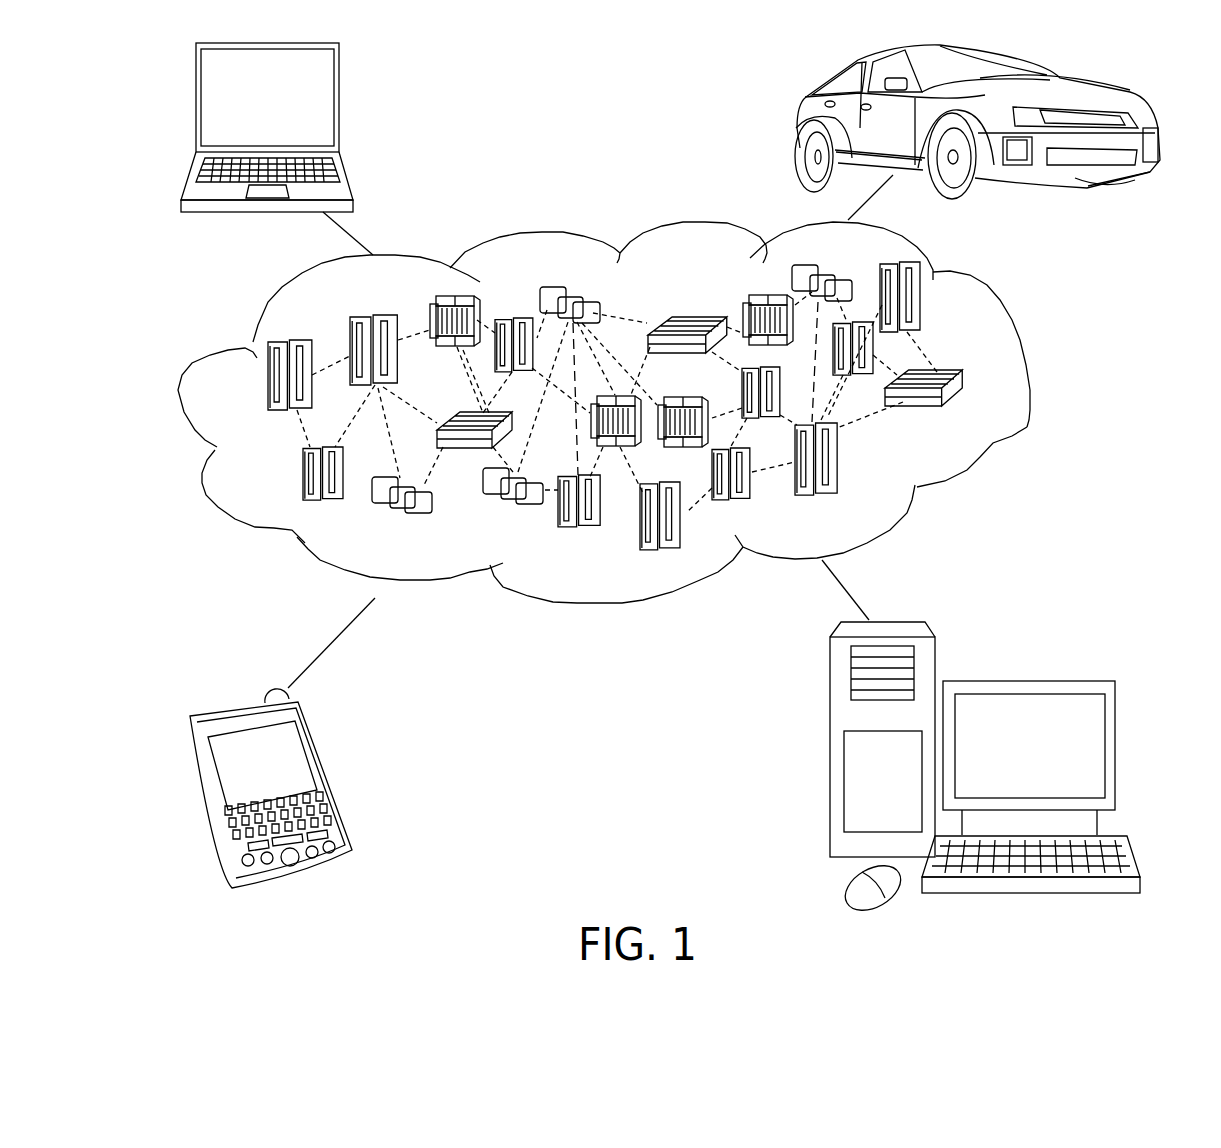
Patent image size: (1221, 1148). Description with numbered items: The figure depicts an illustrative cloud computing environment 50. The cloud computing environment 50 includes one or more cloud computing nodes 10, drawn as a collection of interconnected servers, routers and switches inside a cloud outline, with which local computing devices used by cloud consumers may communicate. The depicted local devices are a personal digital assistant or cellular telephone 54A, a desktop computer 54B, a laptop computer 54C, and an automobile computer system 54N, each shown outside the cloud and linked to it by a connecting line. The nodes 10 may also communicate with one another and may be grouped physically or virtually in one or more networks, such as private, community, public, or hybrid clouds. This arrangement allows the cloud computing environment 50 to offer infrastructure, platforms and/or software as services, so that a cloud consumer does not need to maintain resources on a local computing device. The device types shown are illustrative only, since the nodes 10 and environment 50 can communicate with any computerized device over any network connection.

The cloud computing node 10 is at (976, 416).
The cloud computing environment 50 is at (632, 412).
The personal digital assistant or cellular telephone 54A is at (299, 743).
The desktop computer 54B is at (981, 739).
The laptop computer 54C is at (300, 149).
The automobile computer system 54N is at (939, 132).